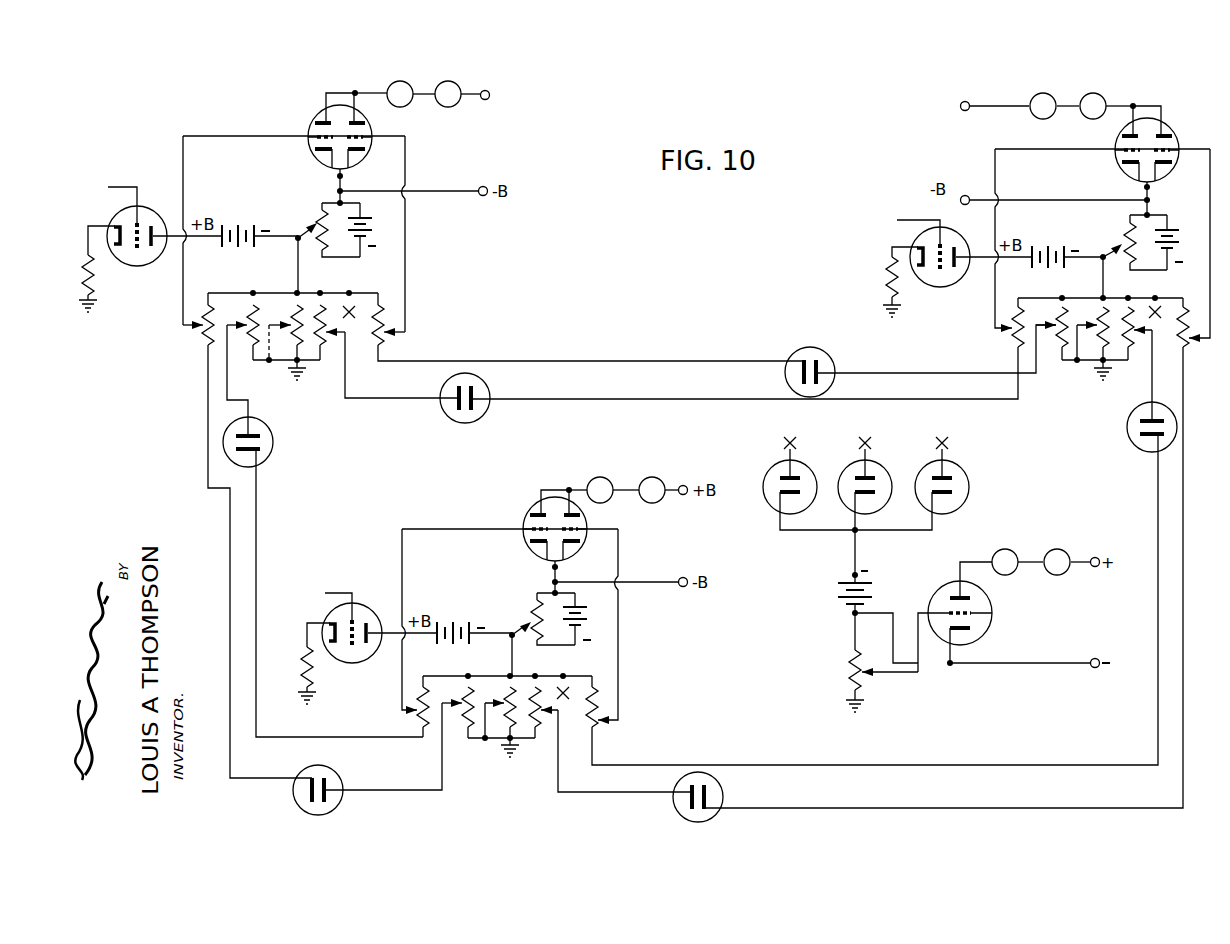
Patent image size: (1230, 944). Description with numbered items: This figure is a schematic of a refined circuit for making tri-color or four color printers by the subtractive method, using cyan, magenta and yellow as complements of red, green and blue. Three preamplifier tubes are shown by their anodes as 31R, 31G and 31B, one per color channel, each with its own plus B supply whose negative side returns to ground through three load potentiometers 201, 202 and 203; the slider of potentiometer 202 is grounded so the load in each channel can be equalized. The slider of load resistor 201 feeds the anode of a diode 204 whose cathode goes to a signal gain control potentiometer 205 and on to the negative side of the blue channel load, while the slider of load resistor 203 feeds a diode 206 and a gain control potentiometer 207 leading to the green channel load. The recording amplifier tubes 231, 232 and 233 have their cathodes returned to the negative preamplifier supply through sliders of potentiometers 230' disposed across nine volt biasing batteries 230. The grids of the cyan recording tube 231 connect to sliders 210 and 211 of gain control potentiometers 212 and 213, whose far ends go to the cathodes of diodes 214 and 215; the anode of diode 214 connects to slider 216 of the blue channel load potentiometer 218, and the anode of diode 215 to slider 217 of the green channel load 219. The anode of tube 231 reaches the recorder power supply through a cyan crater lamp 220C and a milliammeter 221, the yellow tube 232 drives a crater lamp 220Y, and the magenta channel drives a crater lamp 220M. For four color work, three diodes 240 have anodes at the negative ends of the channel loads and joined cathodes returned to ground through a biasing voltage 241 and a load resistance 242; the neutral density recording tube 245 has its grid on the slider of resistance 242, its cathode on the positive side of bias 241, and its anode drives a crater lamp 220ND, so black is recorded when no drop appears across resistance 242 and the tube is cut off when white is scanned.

The red channel preamplifier tube 31R is at (149, 207).
The green channel preamplifier tube 31G is at (948, 287).
The blue channel preamplifier tube 31B is at (367, 598).
The cyan recording tube 231 is at (309, 127).
The yellow recorder amplifier tube 232 is at (527, 512).
The recording amplifier tube 233 is at (1166, 122).
The milliammeter 221 is at (446, 82).
The cyan crater lamp 220C is at (397, 107).
The magenta crater lamp 220M is at (1045, 92).
The yellow crater lamp 220Y is at (602, 478).
The neutral density crater lamp 220ND is at (1008, 549).
The biasing battery 230 is at (771, 429).
The bias potentiometer 230' is at (312, 226).
The load potentiometer 201 is at (250, 312).
The load potentiometer 202 is at (300, 310).
The load potentiometer 203 is at (330, 317).
The gain control potentiometer 213 is at (203, 312).
The slider 211 is at (180, 328).
The gain control potentiometer 212 is at (380, 312).
The slider 210 is at (392, 338).
The diode 204 is at (274, 441).
The diode 206 is at (445, 408).
The diode 215 is at (790, 353).
The diode 214 is at (297, 773).
The signal gain control potentiometer 207 is at (1010, 345).
The slider 217 is at (1040, 313).
The load potentiometer 219 is at (1056, 342).
The signal gain control potentiometer 205 is at (413, 718).
The slider 216 is at (443, 700).
The load potentiometer 218 is at (465, 722).
The diodes 240 is at (805, 462).
The biasing voltage 241 is at (863, 580).
The load resistance 242 is at (850, 653).
The neutral density recording tube 245 is at (995, 620).